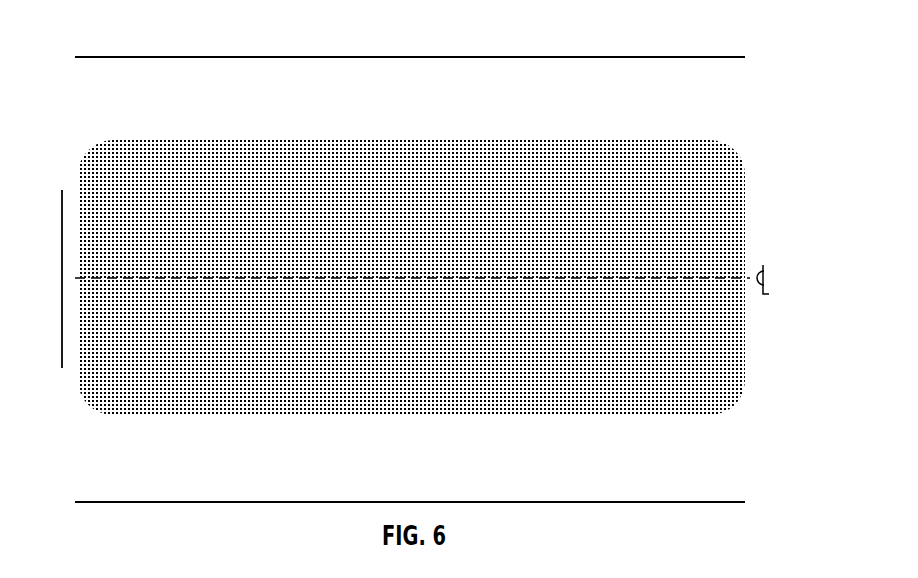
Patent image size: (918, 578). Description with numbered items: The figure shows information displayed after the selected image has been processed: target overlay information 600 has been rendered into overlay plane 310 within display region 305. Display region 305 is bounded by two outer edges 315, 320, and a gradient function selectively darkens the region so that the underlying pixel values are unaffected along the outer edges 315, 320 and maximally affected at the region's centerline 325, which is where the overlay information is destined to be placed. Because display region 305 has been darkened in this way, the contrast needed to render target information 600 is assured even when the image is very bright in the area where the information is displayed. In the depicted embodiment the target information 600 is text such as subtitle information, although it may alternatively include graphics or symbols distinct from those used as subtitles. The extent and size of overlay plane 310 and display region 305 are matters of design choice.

The display region 305 is at (411, 213).
The overlay plane 310 is at (46, 258).
The outer edge 315 is at (429, 57).
The outer edge 320 is at (428, 504).
The centerline 325 is at (438, 279).
The target overlay information 600 is at (454, 272).